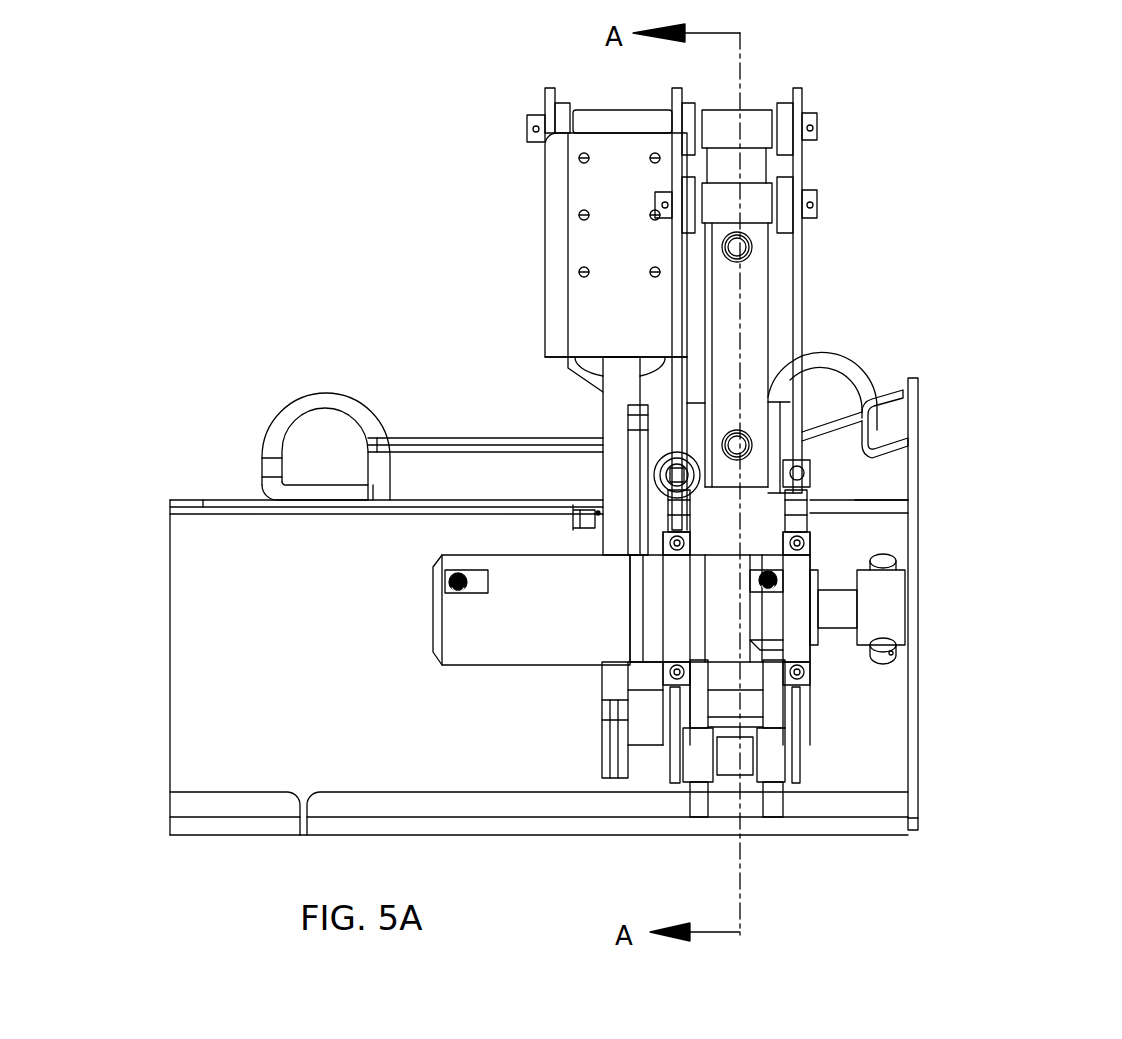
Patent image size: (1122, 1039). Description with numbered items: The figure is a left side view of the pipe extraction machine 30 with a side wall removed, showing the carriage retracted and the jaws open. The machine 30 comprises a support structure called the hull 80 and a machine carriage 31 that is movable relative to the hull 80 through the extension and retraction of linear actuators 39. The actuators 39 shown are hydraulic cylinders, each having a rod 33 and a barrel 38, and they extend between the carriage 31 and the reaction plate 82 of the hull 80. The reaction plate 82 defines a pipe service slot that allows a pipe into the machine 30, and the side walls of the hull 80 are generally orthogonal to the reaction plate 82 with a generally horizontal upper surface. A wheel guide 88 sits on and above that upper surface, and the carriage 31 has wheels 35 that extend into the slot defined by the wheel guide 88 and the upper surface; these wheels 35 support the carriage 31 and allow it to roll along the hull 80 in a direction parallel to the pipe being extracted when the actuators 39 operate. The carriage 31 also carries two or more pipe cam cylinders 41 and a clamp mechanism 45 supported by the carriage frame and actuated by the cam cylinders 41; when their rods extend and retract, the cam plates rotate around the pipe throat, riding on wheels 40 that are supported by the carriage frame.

The pipe extraction machine 30 is at (539, 492).
The machine carriage 31 is at (564, 321).
The rod 33 is at (919, 667).
The wheels 35 is at (645, 453).
The barrel 38 is at (625, 655).
The linear actuators 39 is at (390, 614).
The wheels 40 is at (717, 807).
The pipe cam cylinders 41 is at (805, 309).
The clamp mechanism 45 is at (698, 702).
The hull 80 is at (545, 417).
The reaction plate 82 is at (938, 604).
The wheel guide 88 is at (485, 408).